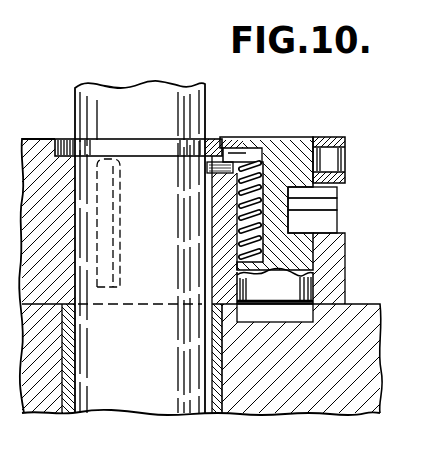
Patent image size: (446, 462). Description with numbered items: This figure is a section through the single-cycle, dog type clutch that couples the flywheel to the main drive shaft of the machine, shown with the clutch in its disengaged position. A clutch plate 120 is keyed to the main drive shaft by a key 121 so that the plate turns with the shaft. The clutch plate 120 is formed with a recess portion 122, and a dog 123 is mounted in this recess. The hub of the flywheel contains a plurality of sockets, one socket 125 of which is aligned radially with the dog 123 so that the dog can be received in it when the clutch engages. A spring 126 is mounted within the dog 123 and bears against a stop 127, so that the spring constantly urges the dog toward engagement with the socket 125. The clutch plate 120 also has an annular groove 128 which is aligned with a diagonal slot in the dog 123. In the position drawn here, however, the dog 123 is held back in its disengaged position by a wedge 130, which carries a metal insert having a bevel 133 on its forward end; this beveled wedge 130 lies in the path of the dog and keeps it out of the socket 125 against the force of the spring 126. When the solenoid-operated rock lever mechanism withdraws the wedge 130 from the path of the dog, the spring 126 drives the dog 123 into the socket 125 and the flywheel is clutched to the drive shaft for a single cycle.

The clutch plate 120 is at (338, 279).
The key 121 is at (116, 228).
The recess portion 122 is at (242, 147).
The dog 123 is at (286, 168).
The socket 125 is at (305, 322).
The spring 126 is at (222, 246).
The stop 127 is at (206, 148).
The annular groove 128 is at (327, 234).
The wedge 130 is at (337, 203).
The bevel 133 is at (335, 192).